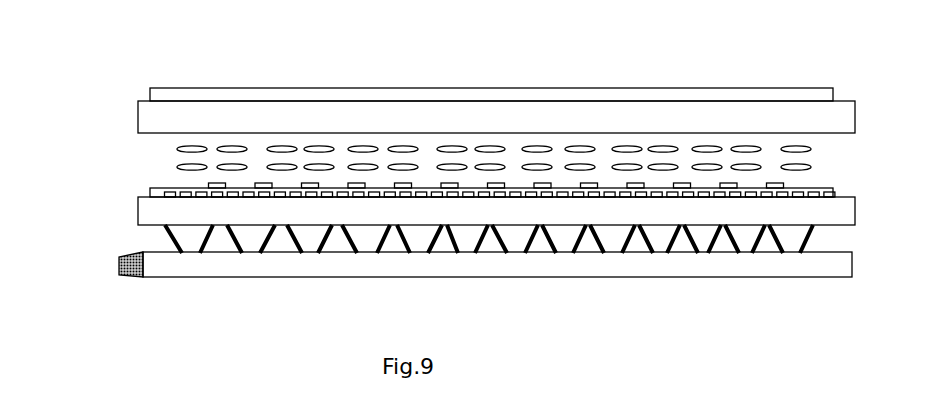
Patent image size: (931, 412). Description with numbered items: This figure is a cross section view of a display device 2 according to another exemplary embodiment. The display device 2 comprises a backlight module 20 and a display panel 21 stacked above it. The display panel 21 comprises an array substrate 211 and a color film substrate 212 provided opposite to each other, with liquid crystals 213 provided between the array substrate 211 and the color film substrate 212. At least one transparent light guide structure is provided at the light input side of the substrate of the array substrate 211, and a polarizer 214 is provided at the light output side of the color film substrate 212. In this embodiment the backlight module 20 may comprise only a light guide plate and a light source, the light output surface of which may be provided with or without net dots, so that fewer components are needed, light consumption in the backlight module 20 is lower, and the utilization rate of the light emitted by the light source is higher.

The display device 2 is at (465, 38).
The backlight module 20 is at (118, 268).
The display panel 21 is at (75, 213).
The array substrate 211 is at (138, 212).
The color film substrate 212 is at (138, 121).
The liquid crystals 213 is at (182, 167).
The polarizer 214 is at (150, 94).